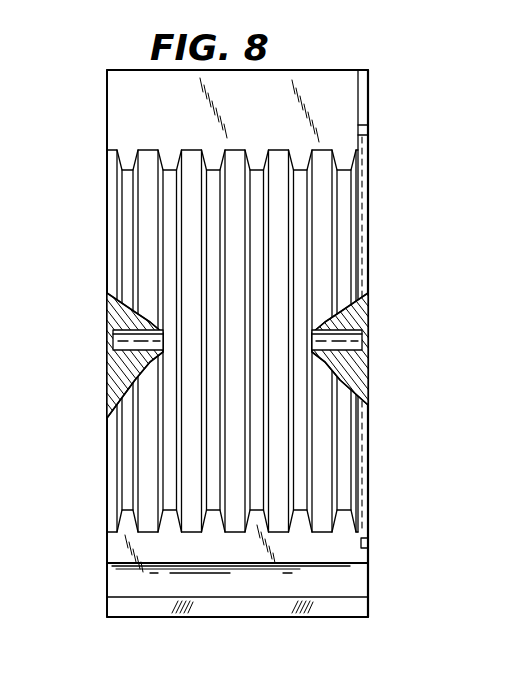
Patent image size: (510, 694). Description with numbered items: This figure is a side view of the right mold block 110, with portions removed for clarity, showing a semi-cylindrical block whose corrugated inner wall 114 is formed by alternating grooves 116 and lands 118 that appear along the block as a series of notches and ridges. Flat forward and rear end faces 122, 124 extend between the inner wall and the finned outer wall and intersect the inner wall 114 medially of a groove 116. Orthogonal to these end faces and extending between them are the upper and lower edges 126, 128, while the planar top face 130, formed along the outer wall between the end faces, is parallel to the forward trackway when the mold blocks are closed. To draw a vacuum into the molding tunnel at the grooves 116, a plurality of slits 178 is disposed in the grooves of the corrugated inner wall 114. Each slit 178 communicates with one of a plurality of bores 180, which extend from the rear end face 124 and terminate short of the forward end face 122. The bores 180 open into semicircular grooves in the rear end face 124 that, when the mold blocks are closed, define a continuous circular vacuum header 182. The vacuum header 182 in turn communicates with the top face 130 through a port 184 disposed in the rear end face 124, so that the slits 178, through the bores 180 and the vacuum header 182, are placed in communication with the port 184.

The right mold block 110 is at (435, 56).
The corrugated inner wall 114 is at (334, 432).
The groove 116 is at (150, 151).
The land 118 is at (130, 166).
The forward end face 122 is at (106, 229).
The rear end face 124 is at (368, 252).
The upper edge 126 is at (280, 114).
The lower edge 128 is at (250, 553).
The top face 130 is at (340, 70).
The slit 178 is at (322, 176).
The bore 180 is at (355, 340).
The vacuum header 182 is at (370, 322).
The port 184 is at (363, 104).